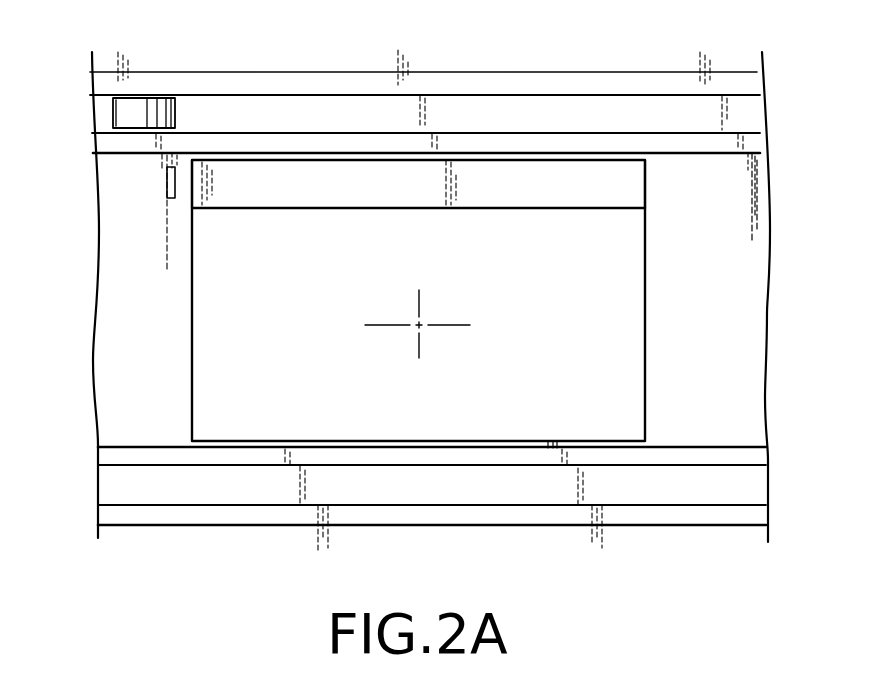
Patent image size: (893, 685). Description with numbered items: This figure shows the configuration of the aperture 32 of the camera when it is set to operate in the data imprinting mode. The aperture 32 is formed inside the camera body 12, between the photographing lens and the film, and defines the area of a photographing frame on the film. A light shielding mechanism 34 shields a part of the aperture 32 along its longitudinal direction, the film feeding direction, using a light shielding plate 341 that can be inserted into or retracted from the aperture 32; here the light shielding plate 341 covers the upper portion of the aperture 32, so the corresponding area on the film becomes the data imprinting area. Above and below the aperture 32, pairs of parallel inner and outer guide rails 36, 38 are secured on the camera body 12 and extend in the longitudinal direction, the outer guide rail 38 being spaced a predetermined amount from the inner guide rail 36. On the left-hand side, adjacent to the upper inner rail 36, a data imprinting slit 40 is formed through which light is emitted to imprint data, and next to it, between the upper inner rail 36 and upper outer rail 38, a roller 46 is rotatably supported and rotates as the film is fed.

The camera body 12 is at (728, 305).
The aperture 32 is at (643, 413).
The light shielding mechanism 34 is at (558, 204).
The light shielding plate 341 is at (306, 190).
The inner guide rail 36 is at (474, 148).
The outer guide rail 38 is at (545, 83).
The data imprinting slit 40 is at (165, 183).
The roller 46 is at (127, 112).